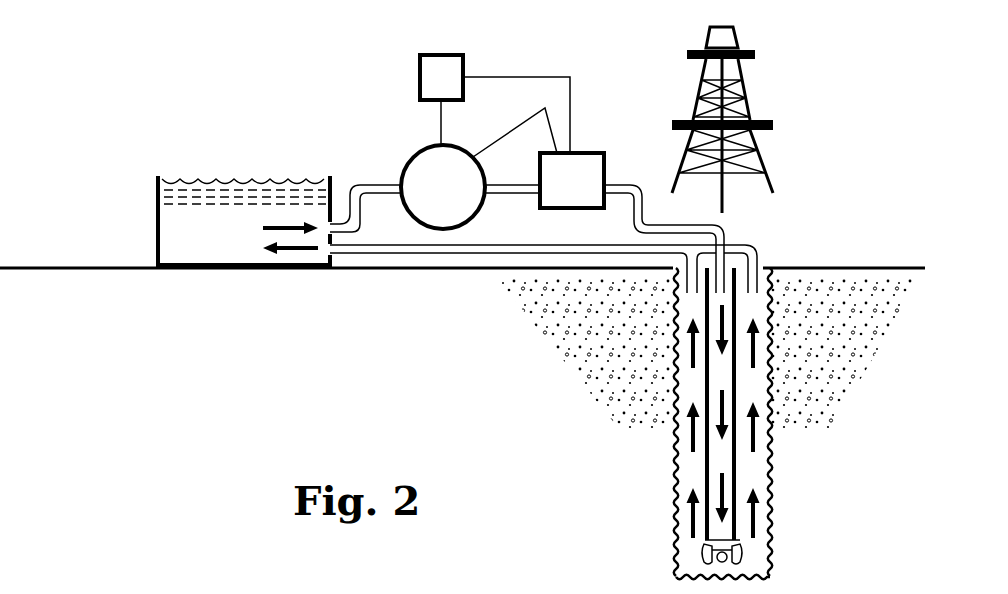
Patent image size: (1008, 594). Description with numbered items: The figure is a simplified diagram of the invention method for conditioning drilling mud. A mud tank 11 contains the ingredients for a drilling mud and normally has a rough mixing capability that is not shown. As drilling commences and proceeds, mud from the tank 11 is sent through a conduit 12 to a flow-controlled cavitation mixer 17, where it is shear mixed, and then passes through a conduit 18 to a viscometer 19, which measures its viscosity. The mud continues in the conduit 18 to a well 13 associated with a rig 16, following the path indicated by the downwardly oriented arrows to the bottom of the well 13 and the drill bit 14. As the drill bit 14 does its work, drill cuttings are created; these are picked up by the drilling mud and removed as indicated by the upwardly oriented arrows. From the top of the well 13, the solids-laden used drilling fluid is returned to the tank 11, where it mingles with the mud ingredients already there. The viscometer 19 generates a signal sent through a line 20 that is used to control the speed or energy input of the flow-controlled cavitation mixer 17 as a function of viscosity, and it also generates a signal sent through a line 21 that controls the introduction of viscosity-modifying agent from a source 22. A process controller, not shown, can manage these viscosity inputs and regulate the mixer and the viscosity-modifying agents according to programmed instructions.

The mud tank 11 is at (158, 210).
The conduit 12 is at (380, 190).
The well 13 is at (676, 482).
The drill bit 14 is at (702, 558).
The rig 16 is at (752, 92).
The flow-controlled cavitation mixer 17 is at (459, 192).
The conduit 18 is at (505, 194).
The viscometer 19 is at (588, 191).
The line 20 is at (528, 119).
The line 21 is at (570, 107).
The source 22 is at (420, 80).